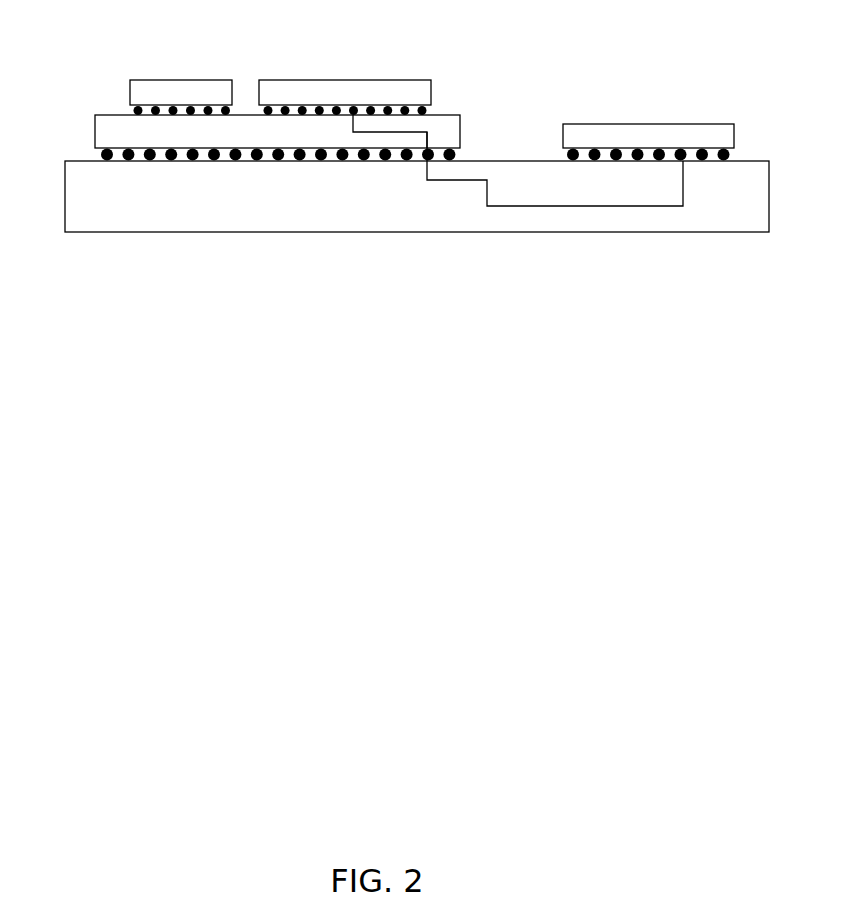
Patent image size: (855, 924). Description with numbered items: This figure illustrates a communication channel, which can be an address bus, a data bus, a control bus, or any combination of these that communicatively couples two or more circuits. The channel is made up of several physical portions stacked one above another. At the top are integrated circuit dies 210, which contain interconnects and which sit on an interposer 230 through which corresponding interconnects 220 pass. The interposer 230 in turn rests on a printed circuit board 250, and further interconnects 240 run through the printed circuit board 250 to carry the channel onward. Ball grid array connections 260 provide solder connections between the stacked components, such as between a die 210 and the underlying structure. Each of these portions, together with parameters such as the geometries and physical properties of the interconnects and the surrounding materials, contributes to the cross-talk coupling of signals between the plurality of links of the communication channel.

The integrated circuit die 210 is at (344, 79).
The interconnects through interposers 220 is at (418, 132).
The interposer 230 is at (95, 127).
The interconnects through printed circuit boards 240 is at (487, 180).
The printed circuit board 250 is at (370, 232).
The ball grid array connections 260 is at (735, 157).